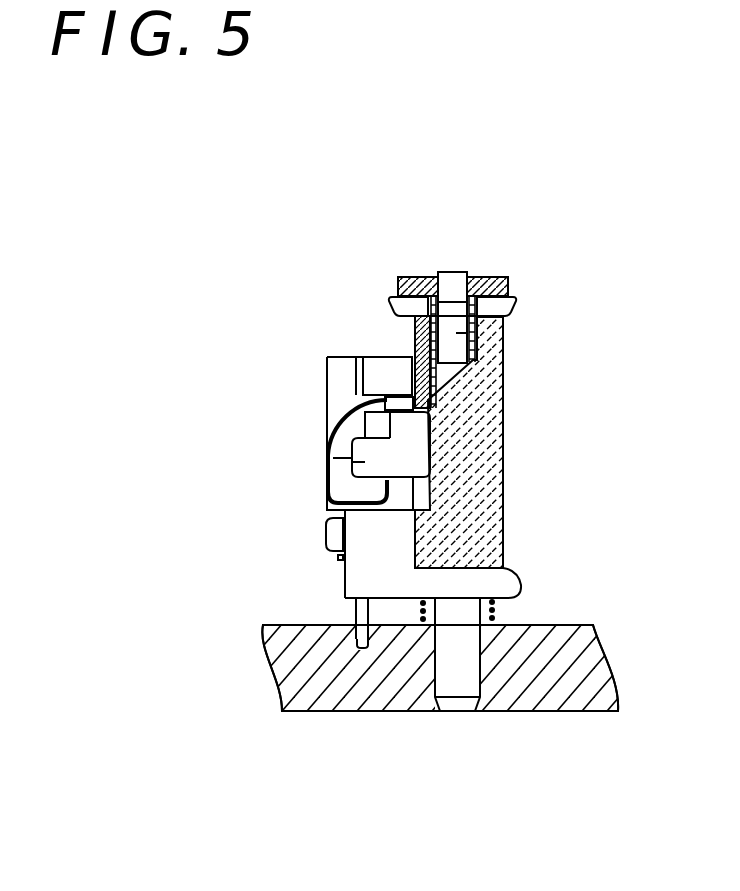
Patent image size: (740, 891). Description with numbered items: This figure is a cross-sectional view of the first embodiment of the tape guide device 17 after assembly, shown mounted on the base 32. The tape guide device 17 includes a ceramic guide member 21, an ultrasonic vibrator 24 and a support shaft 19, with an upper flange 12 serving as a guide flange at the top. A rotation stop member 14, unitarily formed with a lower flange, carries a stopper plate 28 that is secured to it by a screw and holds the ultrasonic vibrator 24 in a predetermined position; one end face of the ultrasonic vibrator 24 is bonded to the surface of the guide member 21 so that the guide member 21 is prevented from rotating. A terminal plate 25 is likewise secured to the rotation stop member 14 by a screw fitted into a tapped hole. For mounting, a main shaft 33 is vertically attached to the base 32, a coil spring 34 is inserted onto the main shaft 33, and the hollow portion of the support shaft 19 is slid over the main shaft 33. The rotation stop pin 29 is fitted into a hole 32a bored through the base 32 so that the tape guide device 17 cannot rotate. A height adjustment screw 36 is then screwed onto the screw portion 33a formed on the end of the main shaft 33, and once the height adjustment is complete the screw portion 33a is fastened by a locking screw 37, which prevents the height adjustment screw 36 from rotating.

The upper flange 12 is at (517, 309).
The rotation stop member 14 is at (335, 567).
The tape guide device 17 is at (422, 394).
The support shaft 19 is at (415, 340).
The guide member 21 is at (505, 513).
The ultrasonic vibrator 24 is at (327, 457).
The terminal plate 25 is at (330, 505).
The stopper plate 28 is at (327, 358).
The rotation stop pin 29 is at (350, 614).
The base 32 is at (585, 623).
The hole 32a is at (362, 648).
The main shaft 33 is at (403, 333).
The screw portion 33a is at (503, 348).
The coil spring 34 is at (497, 612).
The height adjustment screw 36 is at (497, 273).
The locking screw 37 is at (452, 272).